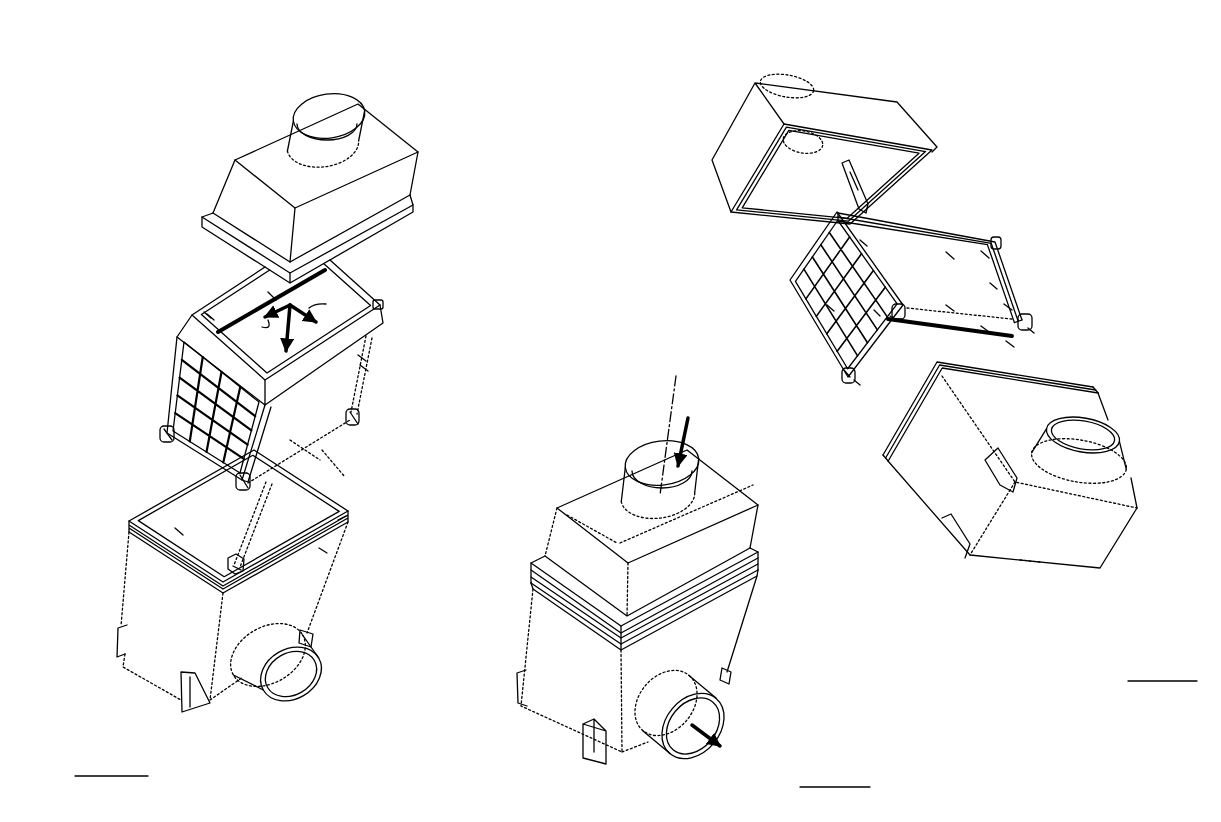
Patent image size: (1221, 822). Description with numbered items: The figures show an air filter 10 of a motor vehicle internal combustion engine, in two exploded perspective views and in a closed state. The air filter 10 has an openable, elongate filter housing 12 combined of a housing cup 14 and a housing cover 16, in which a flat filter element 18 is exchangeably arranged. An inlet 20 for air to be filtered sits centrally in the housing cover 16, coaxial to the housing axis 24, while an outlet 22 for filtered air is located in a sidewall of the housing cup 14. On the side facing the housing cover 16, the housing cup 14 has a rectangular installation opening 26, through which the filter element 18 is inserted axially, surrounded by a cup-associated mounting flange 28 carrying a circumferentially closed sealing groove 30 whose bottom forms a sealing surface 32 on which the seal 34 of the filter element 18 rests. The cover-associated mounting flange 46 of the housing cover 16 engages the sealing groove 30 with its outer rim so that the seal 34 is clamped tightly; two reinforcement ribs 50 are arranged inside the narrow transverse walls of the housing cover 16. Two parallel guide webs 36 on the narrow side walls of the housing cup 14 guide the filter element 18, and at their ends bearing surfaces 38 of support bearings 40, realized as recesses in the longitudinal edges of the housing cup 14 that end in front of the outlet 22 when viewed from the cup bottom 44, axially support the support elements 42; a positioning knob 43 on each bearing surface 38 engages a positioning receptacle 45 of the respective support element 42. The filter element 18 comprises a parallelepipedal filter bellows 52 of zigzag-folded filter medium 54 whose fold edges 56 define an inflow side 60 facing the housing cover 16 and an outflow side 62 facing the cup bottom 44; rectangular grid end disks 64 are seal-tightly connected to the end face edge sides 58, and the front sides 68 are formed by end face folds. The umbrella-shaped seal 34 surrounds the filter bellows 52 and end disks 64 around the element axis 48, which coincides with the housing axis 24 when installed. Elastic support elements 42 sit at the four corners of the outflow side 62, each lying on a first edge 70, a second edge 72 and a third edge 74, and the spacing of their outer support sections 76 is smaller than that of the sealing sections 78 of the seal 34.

In FIG. 1, the air filter 10 is at (130, 124).
In FIG. 3, the air filter 10 is at (587, 451).
In FIG. 2, the air filter 10 is at (1047, 135).
In FIG. 1, the filter housing 12 is at (118, 520).
In FIG. 3, the filter housing 12 is at (557, 504).
In FIG. 2, the filter housing 12 is at (731, 121).
In FIG. 1, the housing cup 14 is at (130, 613).
In FIG. 3, the housing cup 14 is at (527, 655).
In FIG. 2, the housing cup 14 is at (935, 498).
In FIG. 1, the housing cover 16 is at (232, 173).
In FIG. 3, the housing cover 16 is at (556, 537).
In FIG. 2, the housing cover 16 is at (722, 157).
In FIG. 1, the filter element 18 is at (173, 381).
In FIG. 2, the filter element 18 is at (800, 252).
In FIG. 1, the inlet 20 is at (298, 130).
In FIG. 3, the inlet 20 is at (648, 450).
In FIG. 2, the inlet 20 is at (815, 80).
In FIG. 1, the outlet 22 is at (300, 676).
In FIG. 3, the outlet 22 is at (715, 718).
In FIG. 2, the outlet 22 is at (1100, 470).
In FIG. 3, the housing axis 24 is at (677, 389).
In FIG. 1, the installation opening 26 is at (180, 523).
In FIG. 1, the cup-associated mounting flange 28 is at (129, 526).
In FIG. 3, the cup-associated mounting flange 28 is at (525, 577).
In FIG. 2, the cup-associated mounting flange 28 is at (882, 453).
In FIG. 1, the sealing groove 30 is at (343, 520).
In FIG. 1, the sealing surface 32 is at (323, 550).
In FIG. 1, the seal 34 is at (177, 338).
In FIG. 2, the seal 34 is at (798, 291).
In FIG. 1, the guide webs 36 is at (252, 533).
In FIG. 1, the bearing surface 38 is at (232, 560).
In FIG. 1, the support bearings 40 is at (121, 652).
In FIG. 3, the support bearings 40 is at (521, 696).
In FIG. 2, the support bearings 40 is at (957, 546).
In FIG. 1, the support element 42 is at (162, 440).
In FIG. 2, the support element 42 is at (900, 306).
In FIG. 1, the positioning knob 43 is at (237, 568).
In FIG. 2, the cup bottom 44 is at (1030, 565).
In FIG. 2, the positioning receptacles 45 is at (893, 319).
In FIG. 1, the cover-associated mounting flange 46 is at (400, 212).
In FIG. 3, the cover-associated mounting flange 46 is at (743, 558).
In FIG. 2, the cover-associated mounting flange 46 is at (932, 153).
In FIG. 1, the element axis 48 is at (325, 272).
In FIG. 2, the element axis 48 is at (867, 208).
In FIG. 2, the reinforcement ribs 50 is at (855, 180).
In FIG. 1, the filter bellows 52 is at (364, 368).
In FIG. 2, the filter bellows 52 is at (985, 254).
In FIG. 1, the filter medium 54 is at (362, 358).
In FIG. 2, the filter medium 54 is at (1008, 307).
In FIG. 1, the fold edges 56 is at (272, 297).
In FIG. 2, the fold edges 56 is at (976, 364).
In FIG. 1, the end face edge sides 58 is at (207, 315).
In FIG. 2, the end face edge sides 58 is at (993, 262).
In FIG. 1, the inflow side 60 is at (363, 301).
In FIG. 2, the inflow side 60 is at (938, 215).
In FIG. 1, the outflow side 62 is at (327, 458).
In FIG. 2, the outflow side 62 is at (985, 329).
In FIG. 1, the end disk 64 is at (198, 418).
In FIG. 2, the end disk 64 is at (835, 288).
In FIG. 1, the front side 68 is at (210, 316).
In FIG. 2, the front side 68 is at (950, 256).
In FIG. 2, the first edge 70 is at (1010, 344).
In FIG. 1, the second edge 72 is at (305, 455).
In FIG. 2, the second edge 72 is at (950, 308).
In FIG. 1, the third edge 74 is at (358, 383).
In FIG. 2, the third edge 74 is at (864, 243).
In FIG. 1, the end face edge-associated outer support section 76 is at (160, 433).
In FIG. 2, the end face edge-associated outer support section 76 is at (877, 312).
In FIG. 2, the end face edge-associated sealing sections 78 is at (990, 255).